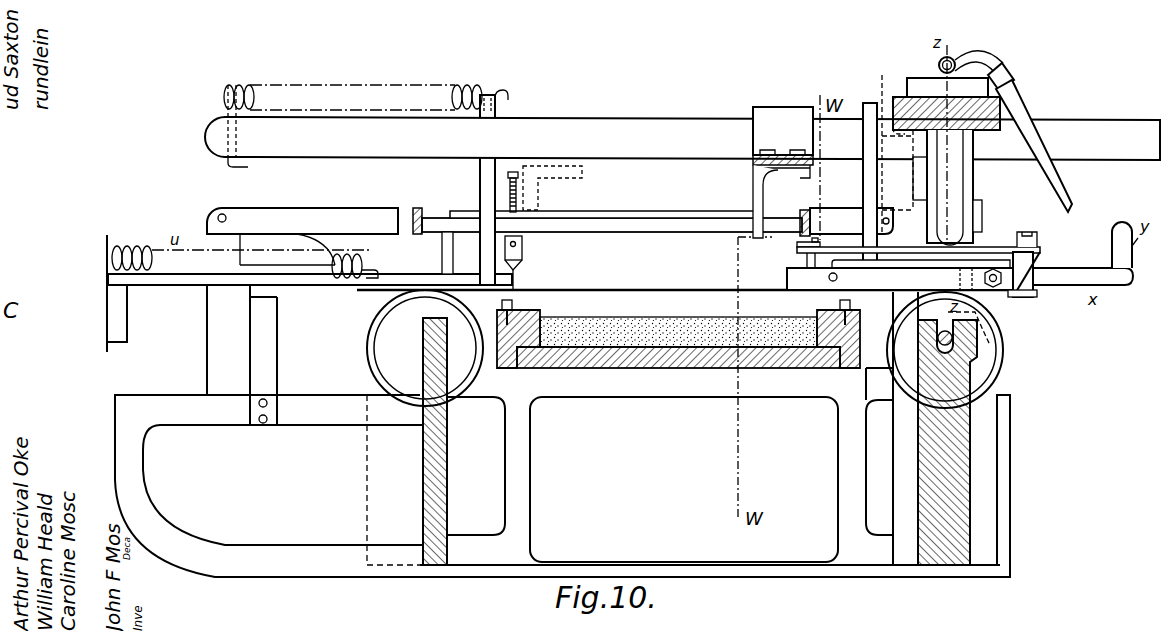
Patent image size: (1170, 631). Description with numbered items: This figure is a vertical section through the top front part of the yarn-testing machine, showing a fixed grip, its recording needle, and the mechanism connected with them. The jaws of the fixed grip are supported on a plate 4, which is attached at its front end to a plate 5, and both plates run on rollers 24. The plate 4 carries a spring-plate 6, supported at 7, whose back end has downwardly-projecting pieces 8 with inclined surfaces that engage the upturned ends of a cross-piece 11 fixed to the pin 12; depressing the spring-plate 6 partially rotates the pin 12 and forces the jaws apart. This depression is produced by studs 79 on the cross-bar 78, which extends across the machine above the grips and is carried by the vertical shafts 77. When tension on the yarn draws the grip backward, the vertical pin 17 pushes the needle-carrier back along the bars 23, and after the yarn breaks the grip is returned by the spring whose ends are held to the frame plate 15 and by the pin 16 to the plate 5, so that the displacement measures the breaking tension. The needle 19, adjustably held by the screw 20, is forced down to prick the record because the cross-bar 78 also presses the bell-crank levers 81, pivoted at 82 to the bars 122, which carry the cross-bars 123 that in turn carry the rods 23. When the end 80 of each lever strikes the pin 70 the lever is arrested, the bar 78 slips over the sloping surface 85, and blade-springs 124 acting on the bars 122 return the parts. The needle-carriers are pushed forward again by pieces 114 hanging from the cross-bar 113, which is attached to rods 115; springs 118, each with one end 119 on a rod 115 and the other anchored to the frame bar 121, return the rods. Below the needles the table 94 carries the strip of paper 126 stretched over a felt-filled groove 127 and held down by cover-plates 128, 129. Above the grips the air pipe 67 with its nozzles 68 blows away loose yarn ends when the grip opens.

The plate 4 is at (680, 289).
The plate 5 is at (408, 278).
The spring-plate 6 is at (980, 250).
The support 7 is at (800, 251).
The downwardly-projecting pieces 8 is at (1038, 266).
The cross-piece 11 is at (1030, 290).
The pin 12 is at (1030, 238).
The plate 15 is at (104, 252).
The pin 16 is at (372, 268).
The vertical pin 17 is at (455, 252).
The needle 19 is at (516, 262).
The screw 20 is at (508, 178).
The bars 23 is at (655, 224).
The rollers 24 is at (395, 306).
The pipe 67 is at (956, 55).
The nozzles 68 is at (1022, 118).
The pin 70 is at (944, 431).
The vertical shafts 77 is at (972, 156).
The cross-bar 78 is at (899, 76).
The studs 79 is at (957, 188).
The end of bell-crank lever 80 is at (980, 213).
The bell-crank levers 81 is at (904, 153).
The pivot 82 is at (862, 195).
The sloping lower surface 85 is at (893, 98).
The table 94 is at (676, 366).
The cross-bar 113 is at (780, 150).
The downwardly-projecting pieces 114 is at (752, 194).
The rods 115 is at (630, 130).
The springs 118 is at (454, 87).
The end of spring 119 is at (236, 86).
The bar 121 is at (498, 132).
The bars 122 is at (352, 215).
The cross-bars 123 is at (424, 214).
The blade-springs 124 is at (330, 260).
The strip of paper 126 is at (606, 315).
The groove 127 is at (678, 332).
The cover-plate 128 is at (530, 315).
The cover-plate 129 is at (838, 312).